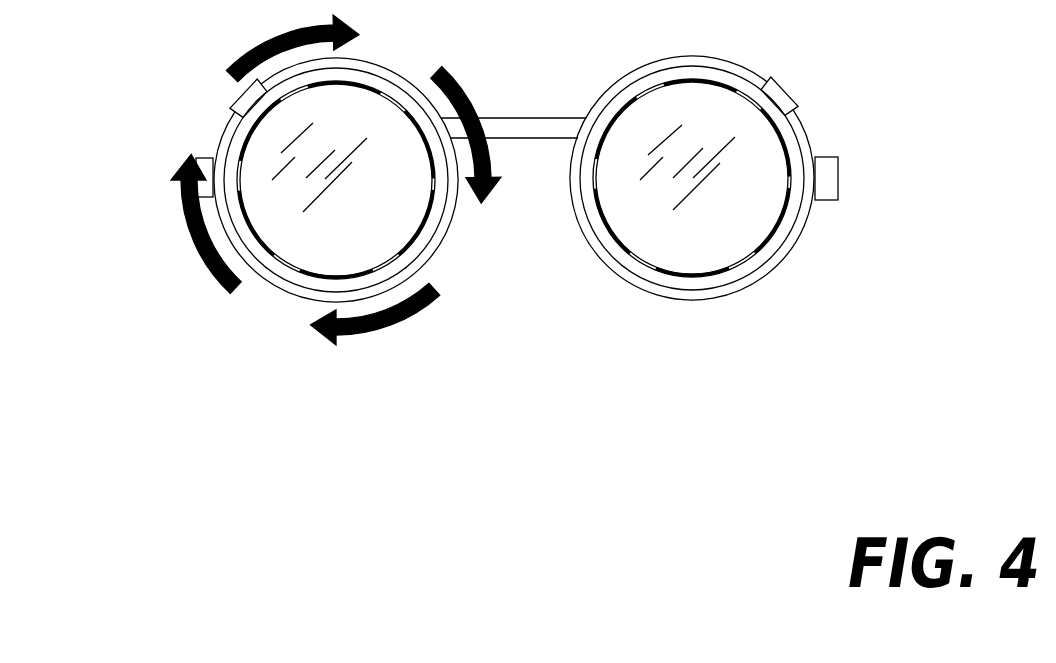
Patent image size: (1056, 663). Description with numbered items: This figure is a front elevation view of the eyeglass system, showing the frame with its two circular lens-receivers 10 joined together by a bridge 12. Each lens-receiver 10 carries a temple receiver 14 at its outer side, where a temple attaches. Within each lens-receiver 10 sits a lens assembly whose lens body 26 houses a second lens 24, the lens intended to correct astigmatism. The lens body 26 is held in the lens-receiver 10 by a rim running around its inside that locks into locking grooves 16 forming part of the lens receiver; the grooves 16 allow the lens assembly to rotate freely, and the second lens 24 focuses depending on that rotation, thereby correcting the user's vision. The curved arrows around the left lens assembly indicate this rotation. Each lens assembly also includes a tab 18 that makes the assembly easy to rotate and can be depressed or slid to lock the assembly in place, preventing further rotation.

The lens-receiver 10 is at (377, 60).
The bridge 12 is at (505, 118).
The temple receiver 14 is at (203, 152).
The locking grooves 16 is at (427, 213).
The tab 18 is at (247, 93).
The second lens 24 is at (352, 252).
The lens body 26 is at (283, 280).